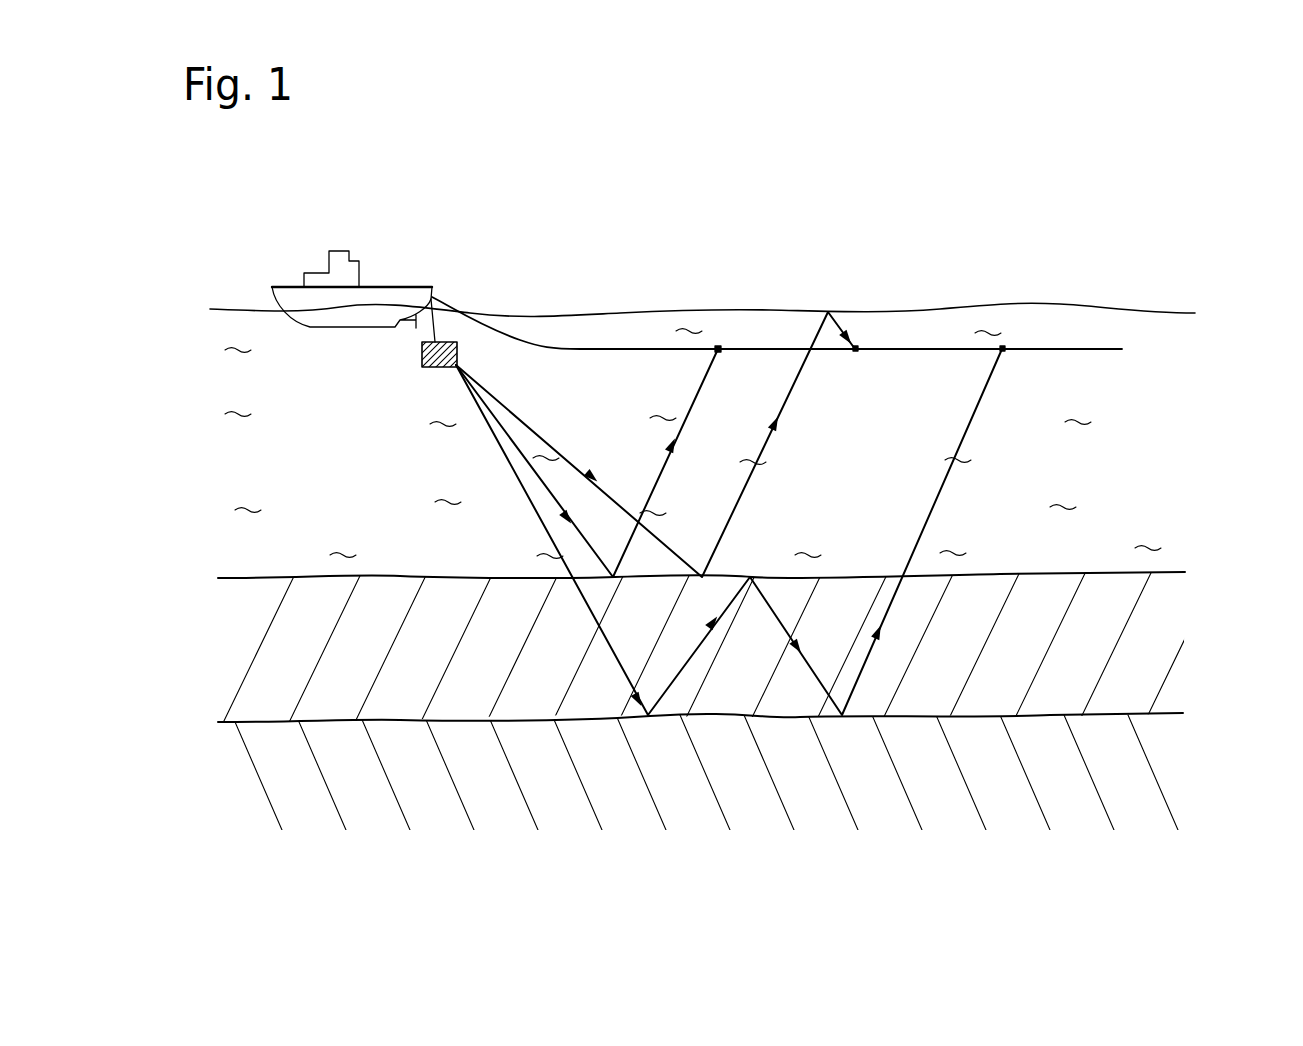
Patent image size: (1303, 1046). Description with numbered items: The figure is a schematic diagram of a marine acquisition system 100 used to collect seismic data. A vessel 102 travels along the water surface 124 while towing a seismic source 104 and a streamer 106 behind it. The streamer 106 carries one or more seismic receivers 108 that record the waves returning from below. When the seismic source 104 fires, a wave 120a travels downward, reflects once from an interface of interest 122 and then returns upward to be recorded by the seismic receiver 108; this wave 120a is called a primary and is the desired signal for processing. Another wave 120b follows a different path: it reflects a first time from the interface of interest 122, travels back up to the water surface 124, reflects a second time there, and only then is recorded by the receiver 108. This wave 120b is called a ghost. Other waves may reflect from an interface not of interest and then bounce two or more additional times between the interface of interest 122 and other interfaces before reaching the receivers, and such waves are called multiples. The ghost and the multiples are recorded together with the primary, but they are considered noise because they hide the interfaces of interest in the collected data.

The marine acquisition system 100 is at (853, 192).
The vessel 102 is at (377, 287).
The seismic source 104 is at (421, 357).
The streamer 106 is at (612, 349).
The seismic receiver 108 is at (716, 348).
The primary wave 120a is at (706, 376).
The ghost wave 120b is at (795, 386).
The interface of interest 122 is at (1047, 574).
The water surface 124 is at (1105, 311).